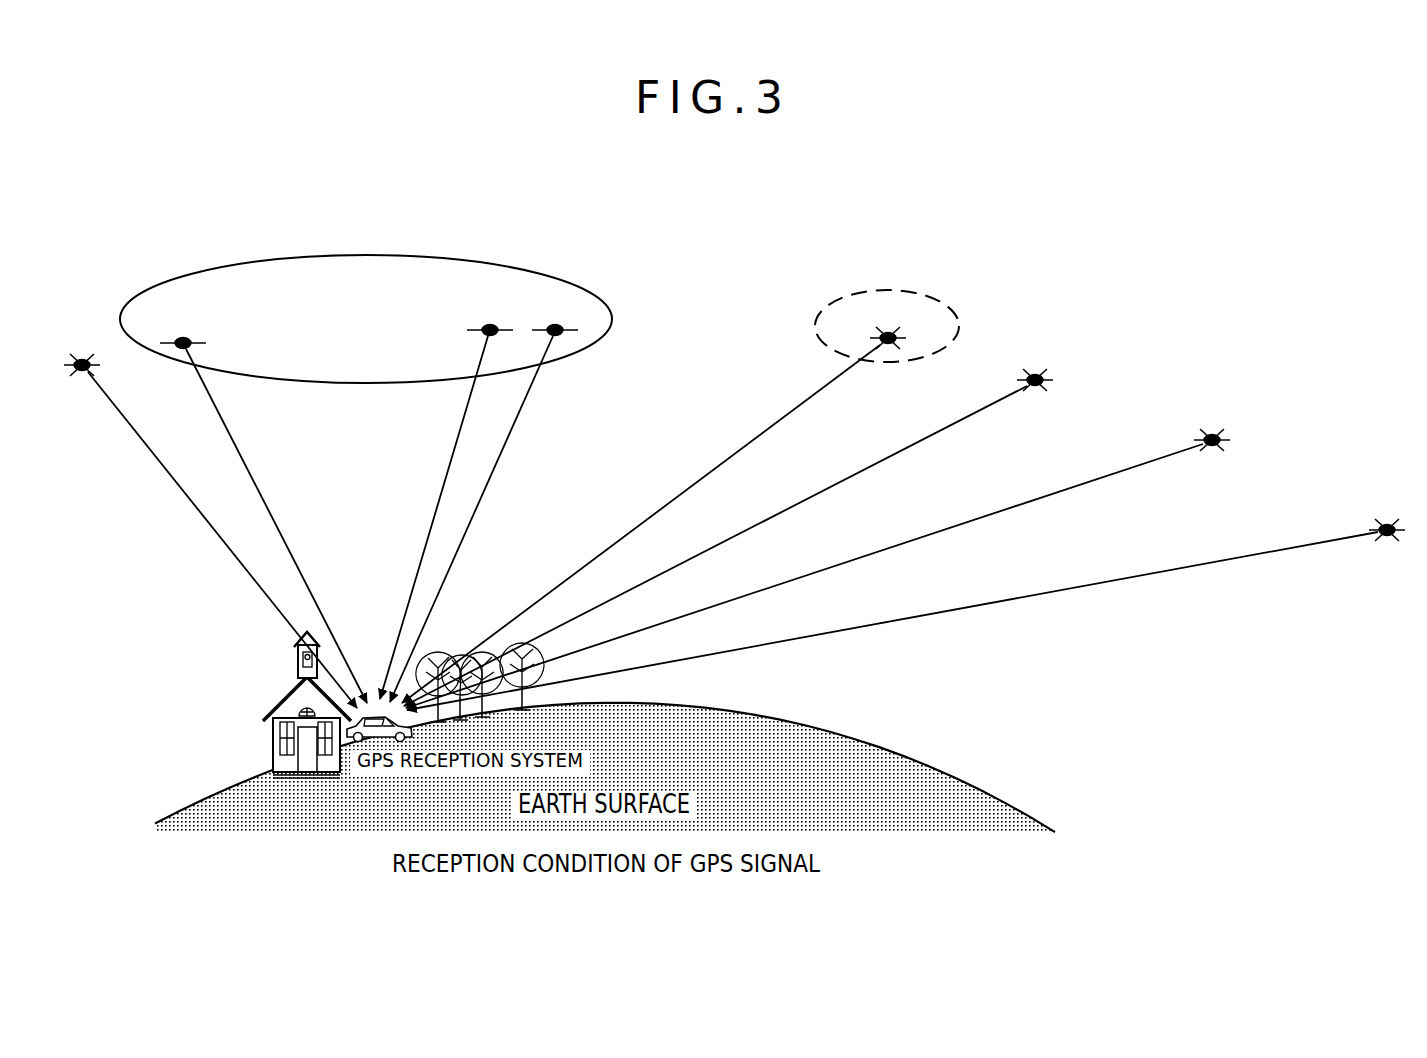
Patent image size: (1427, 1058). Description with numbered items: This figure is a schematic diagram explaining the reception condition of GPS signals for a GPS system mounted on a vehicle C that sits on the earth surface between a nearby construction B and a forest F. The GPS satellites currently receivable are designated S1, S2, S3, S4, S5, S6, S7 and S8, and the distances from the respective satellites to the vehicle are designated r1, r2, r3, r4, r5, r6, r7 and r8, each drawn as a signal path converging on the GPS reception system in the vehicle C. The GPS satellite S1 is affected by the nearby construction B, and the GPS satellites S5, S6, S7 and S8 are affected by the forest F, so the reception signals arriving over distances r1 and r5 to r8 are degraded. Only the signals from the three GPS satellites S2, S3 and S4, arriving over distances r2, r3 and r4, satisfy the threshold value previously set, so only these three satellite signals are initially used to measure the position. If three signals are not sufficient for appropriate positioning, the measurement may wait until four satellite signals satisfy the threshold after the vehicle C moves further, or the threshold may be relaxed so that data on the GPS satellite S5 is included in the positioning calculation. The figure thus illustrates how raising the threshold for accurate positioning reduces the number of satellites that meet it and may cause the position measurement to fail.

The GPS satellite S1 is at (82, 353).
The GPS satellite S2 is at (183, 327).
The GPS satellite S3 is at (490, 314).
The GPS satellite S4 is at (555, 314).
The GPS satellite S5 is at (888, 326).
The GPS satellite S6 is at (1035, 367).
The GPS satellite S7 is at (1212, 427).
The GPS satellite S8 is at (1387, 517).
The distance from GPS satellite to vehicle r1 is at (222, 540).
The distance from GPS satellite to vehicle r2 is at (276, 526).
The distance from GPS satellite to vehicle r3 is at (434, 517).
The distance from GPS satellite to vehicle r4 is at (471, 519).
The distance from GPS satellite to vehicle r5 is at (641, 524).
The distance from GPS satellite to vehicle r6 is at (715, 546).
The distance from GPS satellite to vehicle r7 is at (804, 576).
The distance from GPS satellite to vehicle r8 is at (892, 621).
The construction B is at (272, 710).
The vehicle C is at (375, 717).
The forest F is at (442, 652).